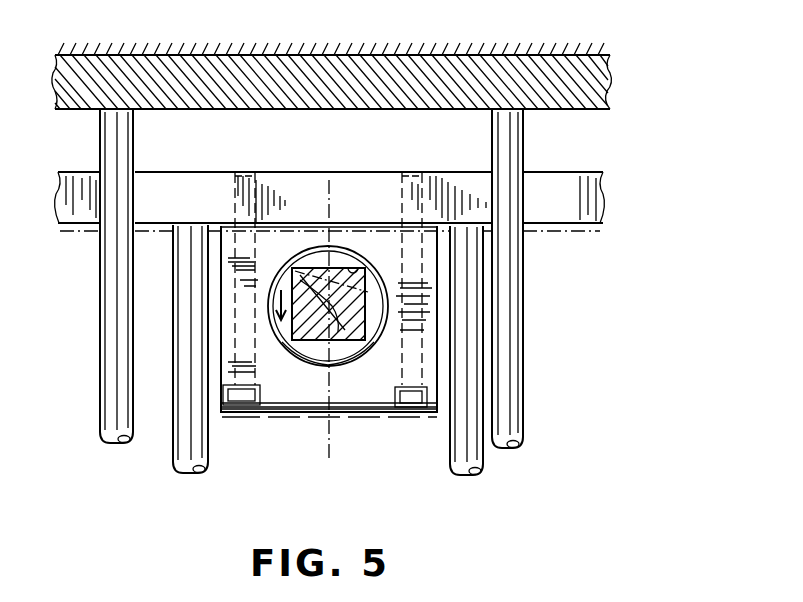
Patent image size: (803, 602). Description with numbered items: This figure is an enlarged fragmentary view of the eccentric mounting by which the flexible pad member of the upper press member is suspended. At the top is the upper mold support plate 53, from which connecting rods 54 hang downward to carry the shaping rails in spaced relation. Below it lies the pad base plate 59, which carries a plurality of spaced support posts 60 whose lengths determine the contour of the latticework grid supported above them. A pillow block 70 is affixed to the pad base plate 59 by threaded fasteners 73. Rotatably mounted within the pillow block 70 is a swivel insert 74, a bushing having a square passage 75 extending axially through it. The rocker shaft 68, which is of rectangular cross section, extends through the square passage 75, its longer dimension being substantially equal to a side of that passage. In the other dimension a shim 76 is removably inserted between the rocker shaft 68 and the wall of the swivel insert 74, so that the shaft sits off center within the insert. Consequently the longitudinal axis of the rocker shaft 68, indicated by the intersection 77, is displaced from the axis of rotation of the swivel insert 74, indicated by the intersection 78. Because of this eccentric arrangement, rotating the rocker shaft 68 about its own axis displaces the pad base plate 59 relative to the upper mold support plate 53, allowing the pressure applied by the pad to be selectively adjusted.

The upper mold support plate 53 is at (610, 82).
The pad base plate 59 is at (586, 180).
The connecting rods 54 is at (103, 272).
The support posts 60 is at (185, 432).
The pillow blocks 70 is at (318, 405).
The threaded fasteners 73 is at (240, 176).
The swivel insert 74 is at (338, 253).
The square passage 75 is at (357, 270).
The shim 76 is at (323, 268).
The intersection 77 is at (330, 318).
The intersection 78 is at (328, 300).
The rocker shaft 68 is at (313, 367).